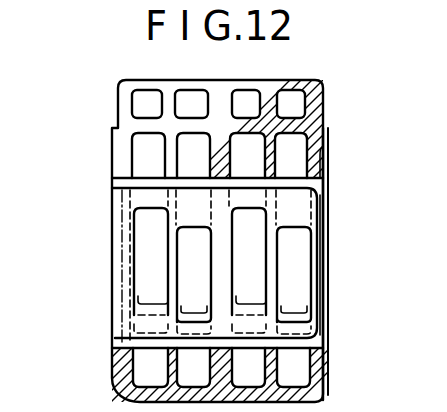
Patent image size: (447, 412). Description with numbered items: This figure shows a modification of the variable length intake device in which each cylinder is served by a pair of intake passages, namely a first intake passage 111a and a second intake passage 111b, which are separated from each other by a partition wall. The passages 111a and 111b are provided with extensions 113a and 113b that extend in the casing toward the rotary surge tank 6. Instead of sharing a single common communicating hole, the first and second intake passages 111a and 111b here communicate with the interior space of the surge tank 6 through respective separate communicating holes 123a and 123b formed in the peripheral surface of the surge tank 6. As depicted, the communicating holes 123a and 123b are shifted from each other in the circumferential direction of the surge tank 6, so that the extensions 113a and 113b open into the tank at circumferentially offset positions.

The second intake passage 111b is at (155, 104).
The first intake passage 111a is at (181, 104).
The extension of second intake passage 113b is at (145, 144).
The extension of first intake passage 113a is at (185, 152).
The communicating hole 123b is at (143, 224).
The communicating hole 123a is at (180, 268).
The rotary surge tank 6 is at (325, 340).